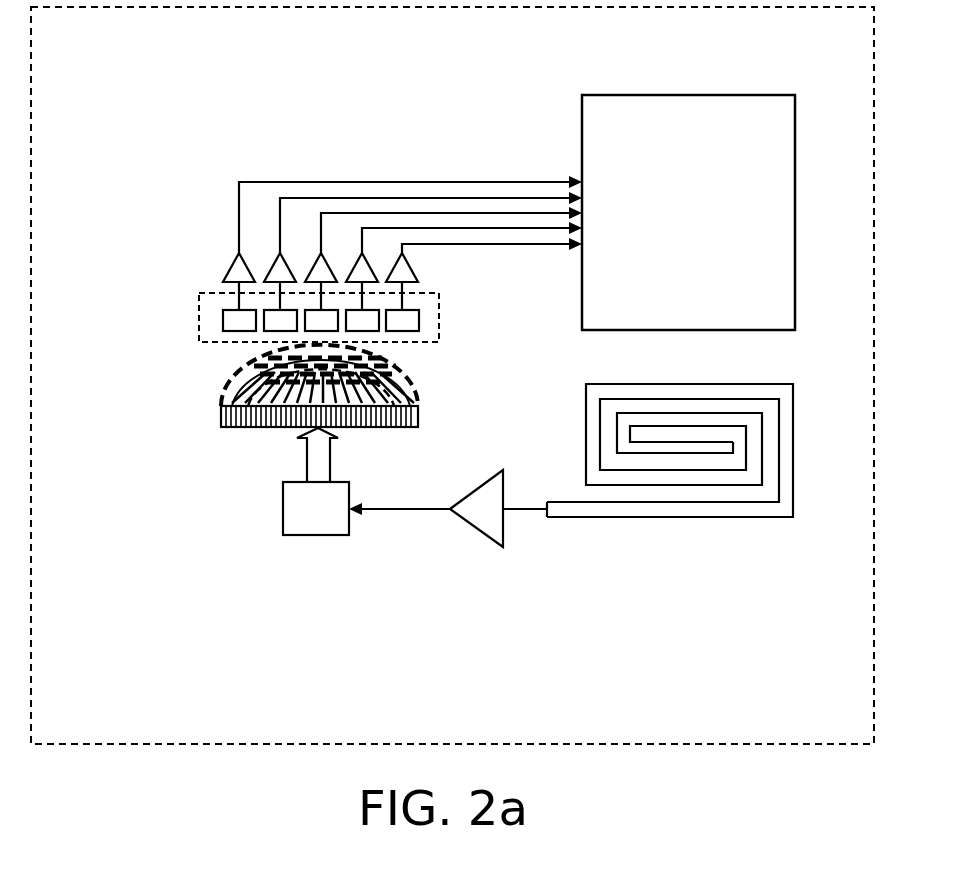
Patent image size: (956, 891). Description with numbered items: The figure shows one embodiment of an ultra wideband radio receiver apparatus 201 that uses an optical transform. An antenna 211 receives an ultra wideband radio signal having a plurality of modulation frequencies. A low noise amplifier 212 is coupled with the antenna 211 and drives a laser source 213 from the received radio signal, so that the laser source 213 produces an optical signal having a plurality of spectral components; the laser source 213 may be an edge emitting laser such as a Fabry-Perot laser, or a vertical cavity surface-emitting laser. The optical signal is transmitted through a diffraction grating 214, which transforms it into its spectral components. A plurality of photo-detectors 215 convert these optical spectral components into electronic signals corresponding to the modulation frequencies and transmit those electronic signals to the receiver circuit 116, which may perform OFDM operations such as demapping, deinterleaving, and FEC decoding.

The ultra wideband radio receiver apparatus 201 is at (158, 712).
The receiver circuit 116 is at (719, 295).
The antenna 211 is at (762, 517).
The low noise amplifier 212 is at (503, 547).
The laser source 213 is at (350, 535).
The diffraction grating 214 is at (215, 412).
The photo-detectors 215 is at (433, 335).